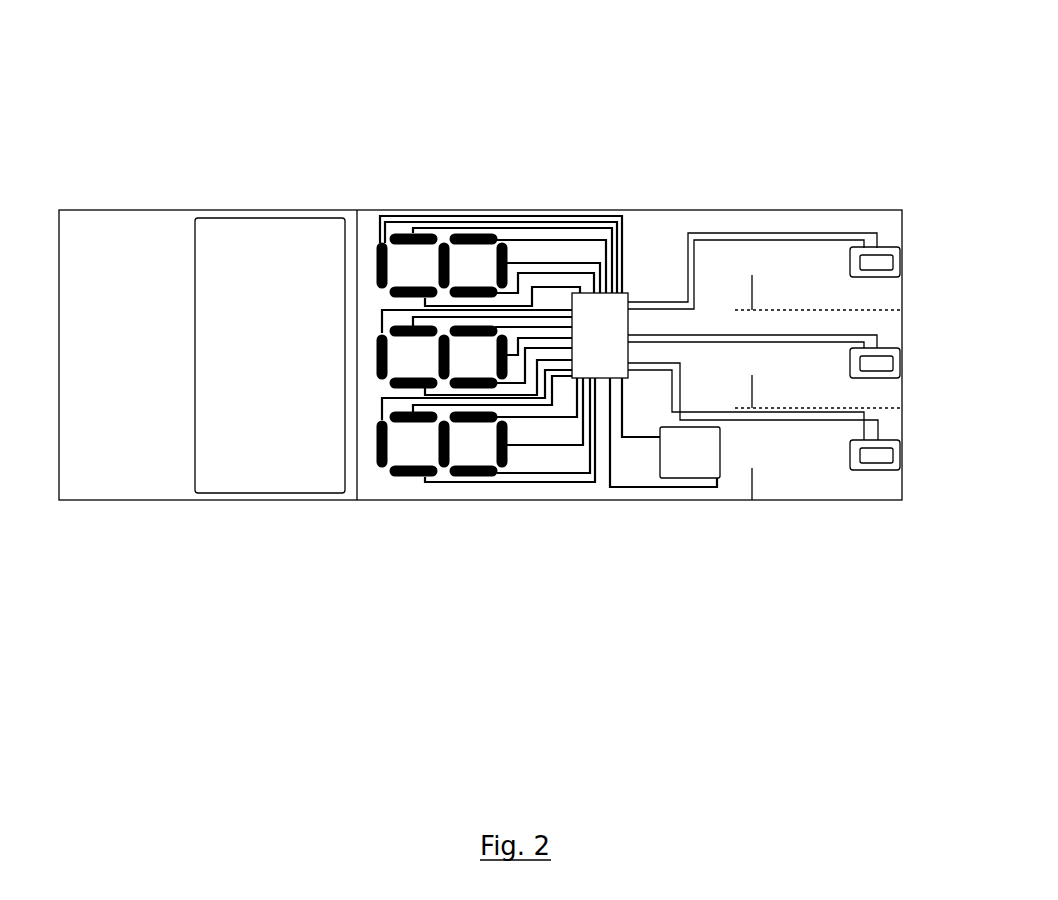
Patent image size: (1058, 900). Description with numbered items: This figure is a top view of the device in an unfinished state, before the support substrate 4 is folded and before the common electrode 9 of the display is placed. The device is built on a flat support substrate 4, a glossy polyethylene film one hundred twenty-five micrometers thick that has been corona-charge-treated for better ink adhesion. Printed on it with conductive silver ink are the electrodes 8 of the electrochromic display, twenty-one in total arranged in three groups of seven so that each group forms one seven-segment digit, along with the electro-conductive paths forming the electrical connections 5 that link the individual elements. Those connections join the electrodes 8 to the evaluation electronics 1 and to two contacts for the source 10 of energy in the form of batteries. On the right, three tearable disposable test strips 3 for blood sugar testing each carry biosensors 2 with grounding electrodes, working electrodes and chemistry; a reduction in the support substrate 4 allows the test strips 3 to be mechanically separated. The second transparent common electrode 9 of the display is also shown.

The evaluation electronics 1 is at (600, 332).
The biosensors 2 is at (888, 450).
The disposable test strips 3 is at (831, 452).
The support substrate 4 is at (377, 485).
The electrical connections 5 is at (542, 220).
The electrodes of the display 8 is at (407, 475).
The common electrode 9 is at (277, 460).
The source of energy 10 is at (687, 462).